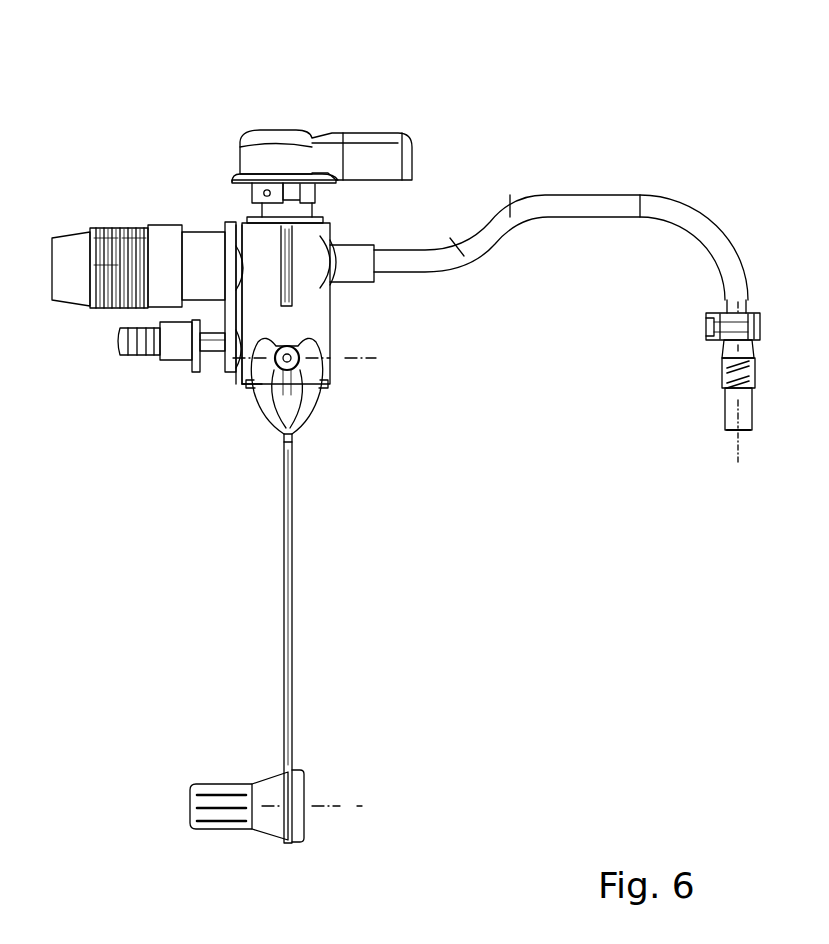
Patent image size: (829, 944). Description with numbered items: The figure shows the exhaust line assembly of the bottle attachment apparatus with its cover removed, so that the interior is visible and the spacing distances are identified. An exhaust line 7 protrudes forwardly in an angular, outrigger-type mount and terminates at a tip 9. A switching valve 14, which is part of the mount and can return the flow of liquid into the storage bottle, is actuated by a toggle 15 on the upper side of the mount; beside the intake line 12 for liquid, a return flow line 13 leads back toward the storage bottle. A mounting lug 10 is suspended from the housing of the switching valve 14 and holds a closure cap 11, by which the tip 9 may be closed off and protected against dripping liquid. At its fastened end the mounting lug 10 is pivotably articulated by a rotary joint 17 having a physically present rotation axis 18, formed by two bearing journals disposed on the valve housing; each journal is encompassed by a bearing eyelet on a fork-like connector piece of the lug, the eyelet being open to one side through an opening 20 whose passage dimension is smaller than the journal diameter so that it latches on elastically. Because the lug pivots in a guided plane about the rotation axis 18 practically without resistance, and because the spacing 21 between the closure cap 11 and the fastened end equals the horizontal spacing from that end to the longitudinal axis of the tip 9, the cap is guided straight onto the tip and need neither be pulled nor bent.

The exhaust line 7 is at (667, 207).
The tip 9 is at (736, 412).
The mounting lug 10 is at (286, 596).
The closure cap 11 is at (266, 788).
The intake line 12 is at (147, 303).
The return flow line 13 is at (128, 355).
The switching valve 14 is at (318, 232).
The toggle 15 is at (276, 136).
The rotary joint 17 is at (242, 385).
The rotation axis 18 is at (302, 352).
The opening 20 is at (293, 346).
The spacing 21 is at (375, 364).